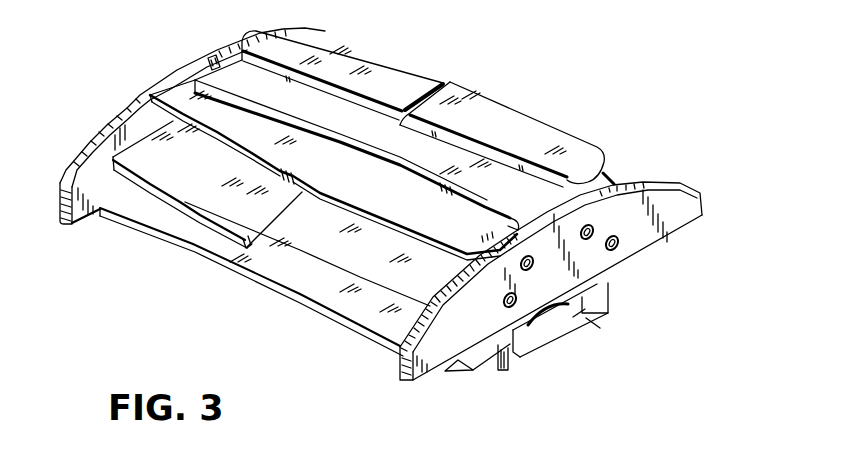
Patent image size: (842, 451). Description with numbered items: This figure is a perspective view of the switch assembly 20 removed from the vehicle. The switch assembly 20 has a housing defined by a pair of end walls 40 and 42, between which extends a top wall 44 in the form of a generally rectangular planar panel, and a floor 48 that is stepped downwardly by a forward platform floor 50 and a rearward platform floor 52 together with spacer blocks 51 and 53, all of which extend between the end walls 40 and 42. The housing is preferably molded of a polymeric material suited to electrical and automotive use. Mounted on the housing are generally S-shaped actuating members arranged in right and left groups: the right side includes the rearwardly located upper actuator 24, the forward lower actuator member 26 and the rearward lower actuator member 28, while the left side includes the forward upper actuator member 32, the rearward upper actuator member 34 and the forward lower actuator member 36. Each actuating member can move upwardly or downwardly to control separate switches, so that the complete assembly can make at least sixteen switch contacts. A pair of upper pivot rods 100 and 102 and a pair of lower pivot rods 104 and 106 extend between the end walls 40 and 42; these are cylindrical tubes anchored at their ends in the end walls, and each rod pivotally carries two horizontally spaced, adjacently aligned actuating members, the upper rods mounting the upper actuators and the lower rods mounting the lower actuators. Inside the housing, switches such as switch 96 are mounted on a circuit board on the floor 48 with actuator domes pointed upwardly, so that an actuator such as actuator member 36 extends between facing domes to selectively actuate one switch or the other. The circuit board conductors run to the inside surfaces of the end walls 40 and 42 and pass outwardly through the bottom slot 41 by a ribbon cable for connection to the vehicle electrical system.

The switch assembly 20 is at (246, 22).
The upper actuator 24 is at (163, 88).
The forward lower actuator member 26 is at (397, 277).
The rearward lower actuator member 28 is at (243, 215).
The forward upper actuator member 32 is at (563, 148).
The rearward upper actuator member 34 is at (388, 67).
The forward lower actuator member 36 is at (612, 178).
The end wall 40 is at (677, 220).
The bottom slot 41 is at (598, 333).
The end wall 42 is at (115, 115).
The top wall 44 is at (218, 63).
The floor 48 is at (528, 350).
The forward platform floor 50 is at (150, 213).
The spacer block 51 is at (508, 355).
The rearward platform floor 52 is at (612, 290).
The spacer block 53 is at (582, 317).
The switch 96 is at (552, 323).
The upper pivot rod 100 is at (520, 268).
The upper pivot rod 102 is at (597, 223).
The lower pivot rod 104 is at (505, 305).
The lower pivot rod 106 is at (618, 243).